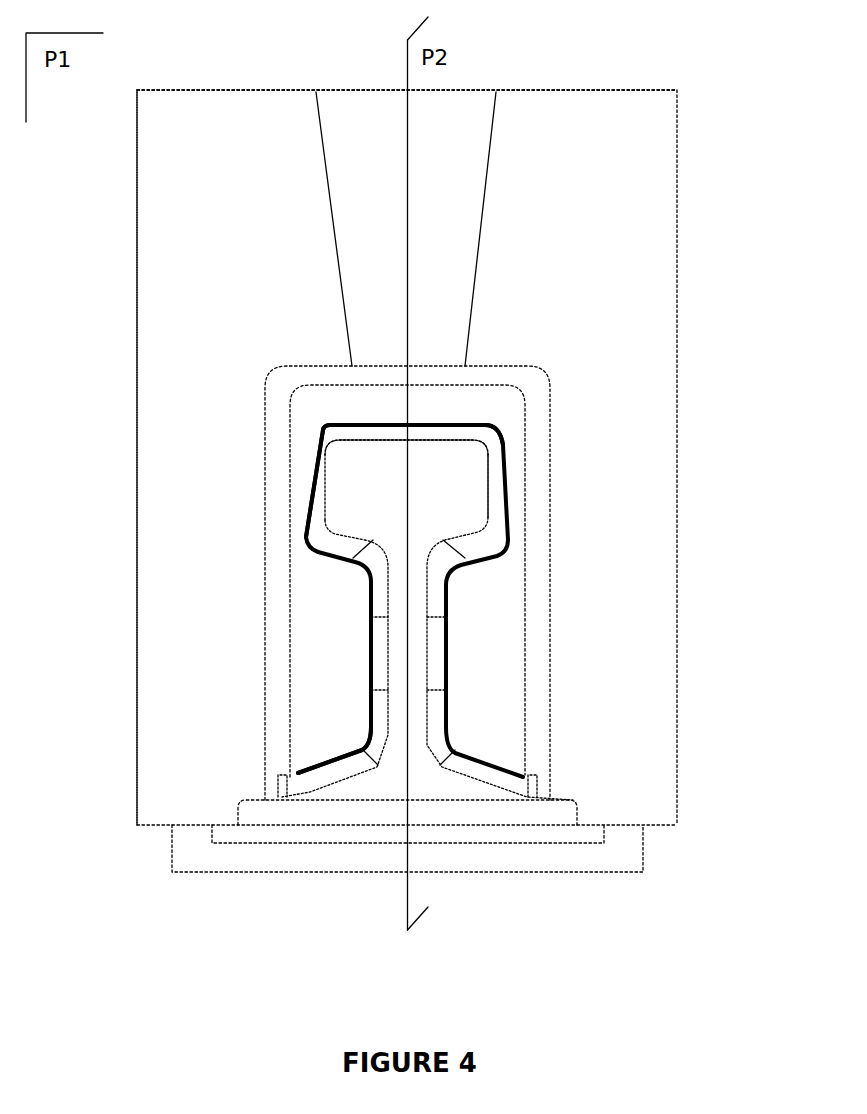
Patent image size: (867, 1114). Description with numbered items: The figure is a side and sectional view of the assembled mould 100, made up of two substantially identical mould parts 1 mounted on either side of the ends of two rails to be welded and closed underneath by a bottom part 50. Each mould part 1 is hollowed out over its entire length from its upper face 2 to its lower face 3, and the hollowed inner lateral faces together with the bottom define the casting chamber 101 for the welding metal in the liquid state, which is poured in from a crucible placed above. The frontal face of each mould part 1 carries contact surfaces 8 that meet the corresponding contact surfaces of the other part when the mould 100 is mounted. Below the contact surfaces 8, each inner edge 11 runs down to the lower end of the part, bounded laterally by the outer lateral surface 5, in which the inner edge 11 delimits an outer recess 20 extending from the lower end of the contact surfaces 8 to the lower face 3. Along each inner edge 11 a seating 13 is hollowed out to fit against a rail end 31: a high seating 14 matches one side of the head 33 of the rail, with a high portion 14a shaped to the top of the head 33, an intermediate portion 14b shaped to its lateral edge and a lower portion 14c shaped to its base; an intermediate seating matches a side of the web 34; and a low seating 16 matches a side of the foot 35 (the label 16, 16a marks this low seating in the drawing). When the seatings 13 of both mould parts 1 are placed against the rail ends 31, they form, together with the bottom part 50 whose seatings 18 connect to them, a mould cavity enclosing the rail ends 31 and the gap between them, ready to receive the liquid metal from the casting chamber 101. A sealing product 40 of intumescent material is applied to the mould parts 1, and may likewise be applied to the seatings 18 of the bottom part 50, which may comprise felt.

The mould 100 is at (130, 187).
The mould part 1 is at (137, 341).
The upper face 2 is at (180, 90).
The lower face 3 is at (155, 826).
The outer lateral surface 5 is at (162, 403).
The contact surface 8 is at (407, 243).
The casting chamber 101 is at (455, 278).
The inner edge 11 is at (488, 670).
The seating 13 is at (380, 652).
The high seating 14 is at (318, 488).
The high portion 14a is at (343, 437).
The intermediate portion 14b is at (314, 483).
The lower portion 14c is at (328, 538).
The low seating 16 is at (327, 773).
The foot top surface 16a is at (334, 750).
The seating of the bottom part 18 is at (497, 826).
The outer recess 20 is at (508, 518).
The rail end 31 is at (495, 472).
The head 33 is at (446, 501).
The web 34 is at (420, 654).
The foot 35 is at (443, 804).
The sealing product 40 is at (450, 598).
The bottom part 50 is at (627, 852).